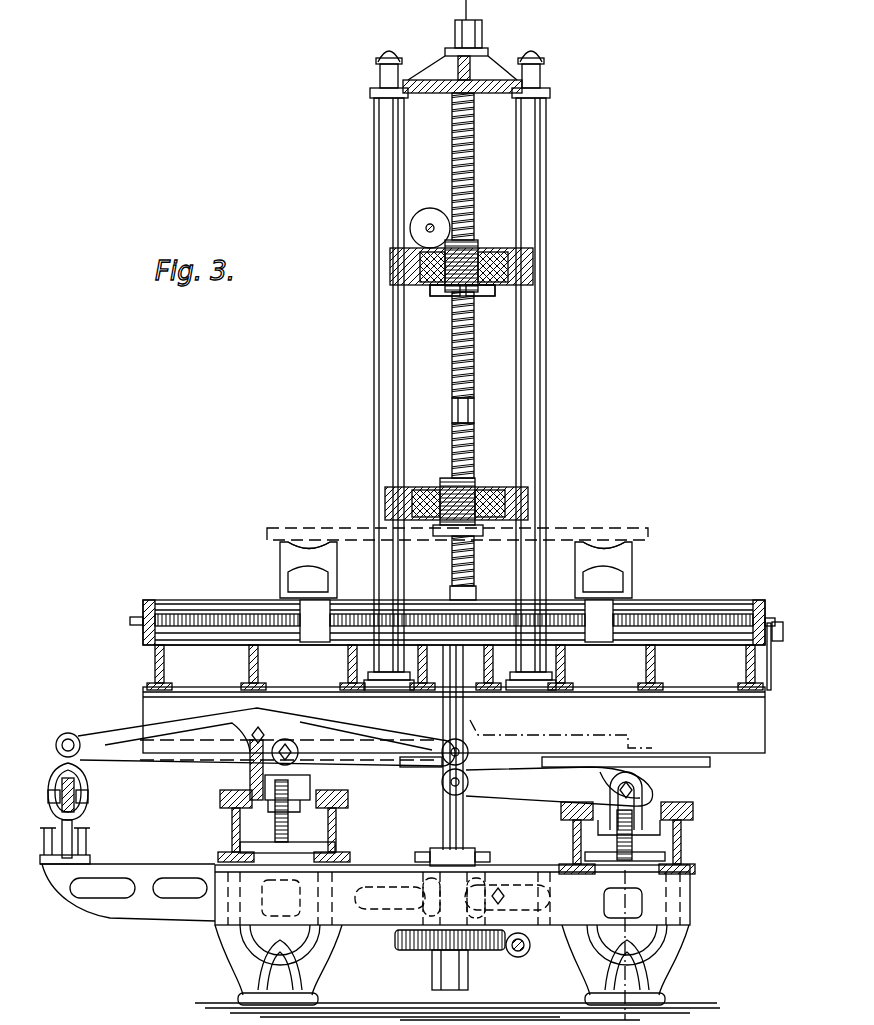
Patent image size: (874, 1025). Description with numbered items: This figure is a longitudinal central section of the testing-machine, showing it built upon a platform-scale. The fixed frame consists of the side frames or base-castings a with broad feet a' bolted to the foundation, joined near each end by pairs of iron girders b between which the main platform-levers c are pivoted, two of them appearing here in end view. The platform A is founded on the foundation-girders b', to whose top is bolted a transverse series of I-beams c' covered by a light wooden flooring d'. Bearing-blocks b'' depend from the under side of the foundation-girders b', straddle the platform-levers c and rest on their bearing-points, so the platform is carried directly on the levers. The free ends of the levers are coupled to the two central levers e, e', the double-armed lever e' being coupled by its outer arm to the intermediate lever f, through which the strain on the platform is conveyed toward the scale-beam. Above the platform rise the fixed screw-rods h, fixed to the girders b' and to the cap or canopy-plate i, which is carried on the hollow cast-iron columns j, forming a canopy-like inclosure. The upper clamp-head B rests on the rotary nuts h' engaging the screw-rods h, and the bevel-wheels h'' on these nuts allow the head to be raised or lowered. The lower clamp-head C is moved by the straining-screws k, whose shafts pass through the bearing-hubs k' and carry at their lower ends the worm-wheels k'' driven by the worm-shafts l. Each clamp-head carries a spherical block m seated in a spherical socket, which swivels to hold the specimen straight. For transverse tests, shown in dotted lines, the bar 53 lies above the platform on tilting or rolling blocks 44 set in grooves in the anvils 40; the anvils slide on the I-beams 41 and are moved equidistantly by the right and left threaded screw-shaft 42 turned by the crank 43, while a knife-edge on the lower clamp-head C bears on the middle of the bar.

The fixed screw-rods h is at (467, 300).
The cap or canopy-plate i is at (462, 74).
The hollow cast-iron columns j is at (460, 370).
The upper clamp-head B is at (535, 265).
The spherical block m is at (486, 248).
The rotary nuts h' is at (440, 313).
The bevel-wheels h'' is at (487, 308).
The lower clamp-head C is at (456, 498).
The bar 53 is at (462, 525).
The adjustable blocks or anvils 40 is at (456, 570).
The tilting or rolling blocks 44 is at (320, 544).
The platform A is at (454, 611).
The I-beams 41 is at (454, 612).
The right and left threaded screw-shaft 42 is at (456, 627).
The crank 43 is at (771, 690).
The flooring d' is at (454, 654).
The transverse I-beams c' is at (455, 667).
The foundation-girders b' is at (454, 720).
The bearing-blocks b'' is at (549, 774).
The double-armed central lever e' is at (266, 754).
The intermediate lever f is at (86, 796).
The straining-screws k is at (452, 712).
The central lever e is at (559, 786).
The iron girders b is at (451, 832).
The main platform-levers c is at (491, 816).
The side frames or base-castings a is at (365, 894).
The bearing-hubs k' is at (468, 898).
The broad feet a' is at (457, 945).
The worm-wheels k'' is at (431, 960).
The worm-shafts l is at (521, 951).